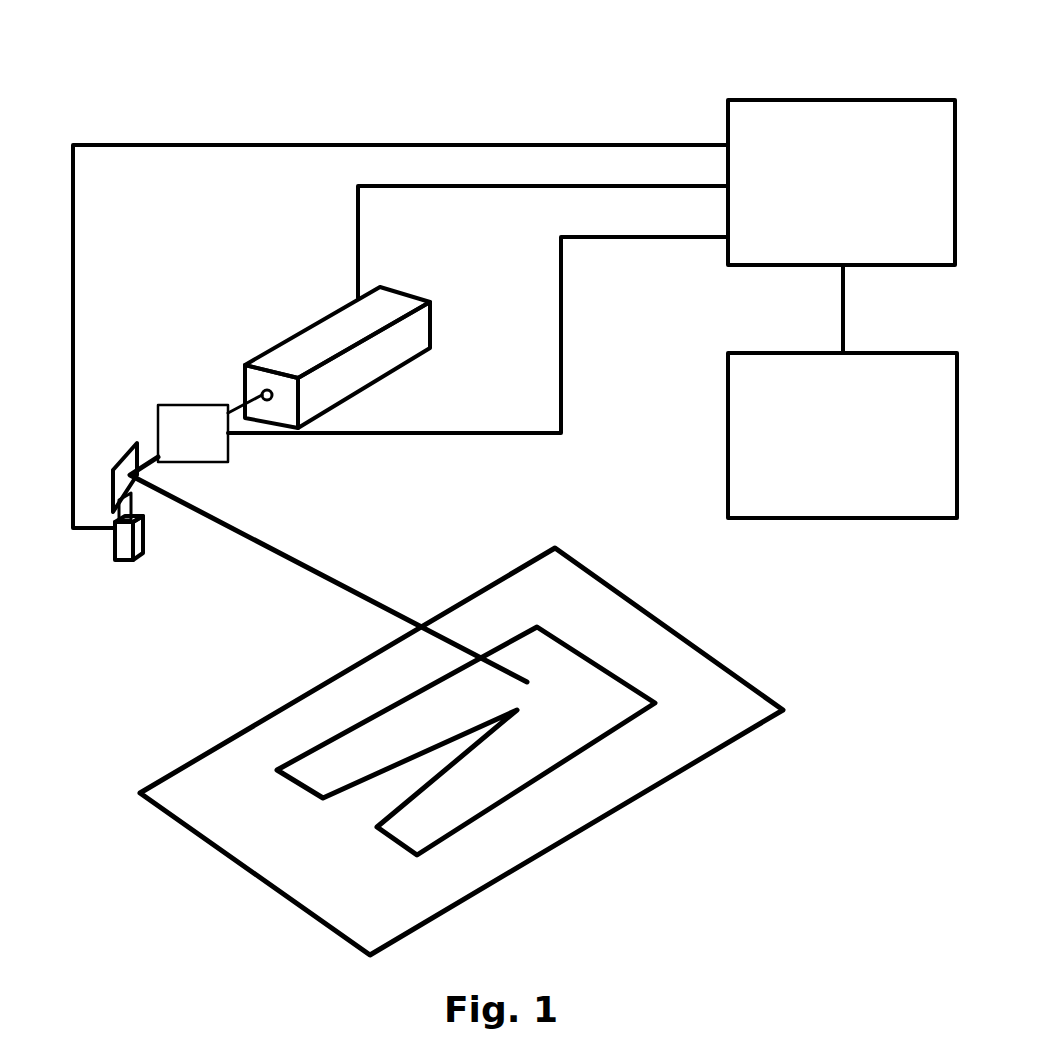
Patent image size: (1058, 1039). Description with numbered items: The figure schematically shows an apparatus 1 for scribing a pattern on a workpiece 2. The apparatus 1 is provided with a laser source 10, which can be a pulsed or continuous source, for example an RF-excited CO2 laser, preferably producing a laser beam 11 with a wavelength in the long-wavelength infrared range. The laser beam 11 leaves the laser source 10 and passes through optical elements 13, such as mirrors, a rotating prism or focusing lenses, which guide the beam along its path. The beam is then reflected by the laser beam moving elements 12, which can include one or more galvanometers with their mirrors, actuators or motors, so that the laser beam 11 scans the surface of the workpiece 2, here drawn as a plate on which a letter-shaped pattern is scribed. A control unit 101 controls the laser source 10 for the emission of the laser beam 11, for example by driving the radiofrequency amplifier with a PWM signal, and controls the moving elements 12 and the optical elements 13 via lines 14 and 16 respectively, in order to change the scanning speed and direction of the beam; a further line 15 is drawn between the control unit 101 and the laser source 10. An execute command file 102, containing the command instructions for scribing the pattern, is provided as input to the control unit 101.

The apparatus 1 is at (292, 126).
The workpiece 2 is at (567, 670).
The laser source 10 is at (387, 348).
The laser beam 11 is at (243, 538).
The laser beam moving elements 12 is at (118, 556).
The optical elements 13 is at (210, 428).
The line 14 is at (560, 145).
The signal line 15 is at (352, 250).
The line 16 is at (667, 237).
The control unit 101 is at (841, 182).
The execute command file 102 is at (842, 435).